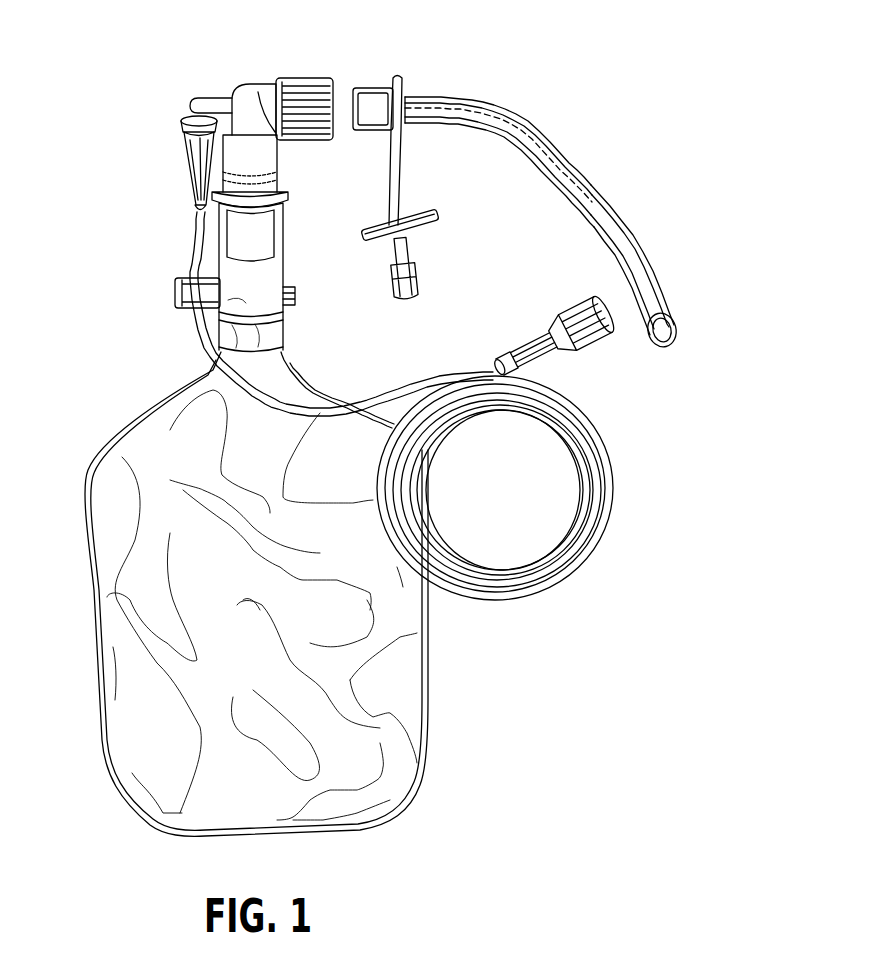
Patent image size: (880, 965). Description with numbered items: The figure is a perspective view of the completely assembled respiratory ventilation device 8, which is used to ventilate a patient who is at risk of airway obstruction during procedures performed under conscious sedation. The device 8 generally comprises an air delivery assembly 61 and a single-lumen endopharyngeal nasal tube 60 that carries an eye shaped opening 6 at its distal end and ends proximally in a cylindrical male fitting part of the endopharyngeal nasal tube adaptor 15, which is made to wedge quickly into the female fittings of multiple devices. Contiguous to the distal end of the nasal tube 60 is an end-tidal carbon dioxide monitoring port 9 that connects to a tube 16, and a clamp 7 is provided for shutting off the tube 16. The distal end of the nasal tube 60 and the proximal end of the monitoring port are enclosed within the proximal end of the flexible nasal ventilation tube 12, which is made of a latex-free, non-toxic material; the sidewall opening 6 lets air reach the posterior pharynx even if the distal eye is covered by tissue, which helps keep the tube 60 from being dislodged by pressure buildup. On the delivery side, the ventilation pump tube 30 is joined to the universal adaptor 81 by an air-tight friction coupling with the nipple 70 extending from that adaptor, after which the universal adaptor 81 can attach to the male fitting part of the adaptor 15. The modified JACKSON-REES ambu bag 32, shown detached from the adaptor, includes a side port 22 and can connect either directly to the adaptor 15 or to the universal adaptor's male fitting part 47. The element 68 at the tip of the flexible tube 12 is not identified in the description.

The respiratory ventilation device 8 is at (150, 135).
The nipple 70 is at (197, 98).
The universal adaptor 81 is at (263, 93).
The male fitting part 47 is at (262, 152).
The air delivery assembly 61 is at (292, 240).
The side port 22 is at (176, 292).
The ventilation pump tube 30 is at (200, 227).
The endopharyngeal nasal tube adaptor 15 is at (368, 96).
The tube 16 is at (400, 167).
The clamp 7 is at (435, 230).
The end-tidal CO2 monitoring port 9 is at (395, 286).
The single-lumen endopharyngeal nasal tube 60 is at (492, 104).
The flexible nasal ventilation tube 12 is at (632, 268).
The eye shaped opening 6 is at (628, 297).
The catheter distal tip 68 is at (662, 342).
The modified JACKSON-REES ambu bag 32 is at (200, 589).